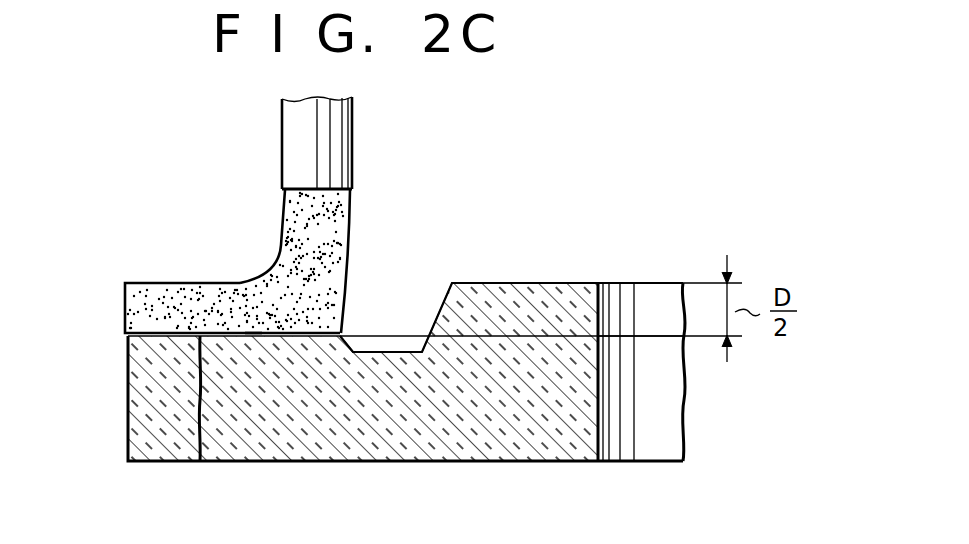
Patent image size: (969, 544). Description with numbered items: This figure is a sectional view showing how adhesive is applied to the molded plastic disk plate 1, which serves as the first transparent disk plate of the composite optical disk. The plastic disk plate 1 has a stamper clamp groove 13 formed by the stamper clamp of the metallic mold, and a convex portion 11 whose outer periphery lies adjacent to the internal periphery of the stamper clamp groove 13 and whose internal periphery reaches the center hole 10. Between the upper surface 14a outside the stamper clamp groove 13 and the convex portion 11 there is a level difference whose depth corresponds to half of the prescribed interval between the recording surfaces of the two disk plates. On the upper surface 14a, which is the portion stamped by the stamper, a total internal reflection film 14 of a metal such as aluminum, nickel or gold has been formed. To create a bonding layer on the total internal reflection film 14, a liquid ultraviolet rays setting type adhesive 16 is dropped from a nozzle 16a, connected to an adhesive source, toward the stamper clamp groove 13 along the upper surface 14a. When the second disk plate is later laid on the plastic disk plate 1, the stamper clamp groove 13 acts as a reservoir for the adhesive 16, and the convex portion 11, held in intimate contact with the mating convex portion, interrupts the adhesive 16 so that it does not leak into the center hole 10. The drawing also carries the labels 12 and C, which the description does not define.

The plastic disk plate 1 is at (366, 448).
The center hole 10 is at (599, 398).
The convex portion 11 is at (537, 283).
The step 12 is at (440, 285).
The stamper clamp groove 13 is at (367, 351).
The total internal reflection film 14 is at (137, 332).
The upper surface 14a is at (253, 332).
The ultraviolet rays setting type adhesive 16 is at (300, 222).
The nozzle 16a is at (352, 130).
The crack C is at (322, 466).